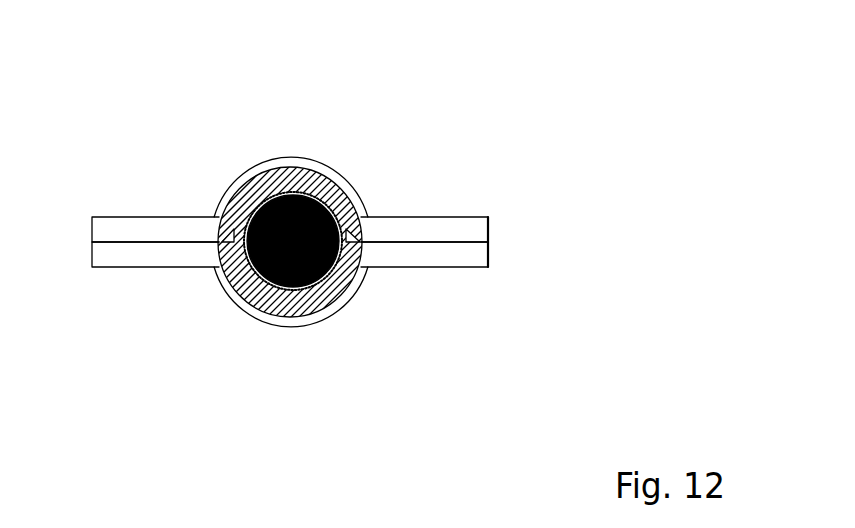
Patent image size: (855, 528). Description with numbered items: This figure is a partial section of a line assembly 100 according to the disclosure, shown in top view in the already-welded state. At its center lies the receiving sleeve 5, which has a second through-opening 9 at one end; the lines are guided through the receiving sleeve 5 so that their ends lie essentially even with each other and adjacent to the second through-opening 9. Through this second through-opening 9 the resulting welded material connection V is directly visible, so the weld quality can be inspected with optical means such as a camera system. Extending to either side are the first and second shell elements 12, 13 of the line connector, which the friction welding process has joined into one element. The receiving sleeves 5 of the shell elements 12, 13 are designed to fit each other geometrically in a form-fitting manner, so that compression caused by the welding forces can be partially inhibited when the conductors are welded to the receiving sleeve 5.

The line assembly 100 is at (145, 131).
The receiving sleeve 5 is at (296, 130).
The second through-opening 9 is at (262, 203).
The welded connection V is at (333, 192).
The first shell element 12 is at (123, 232).
The second shell element 13 is at (155, 255).